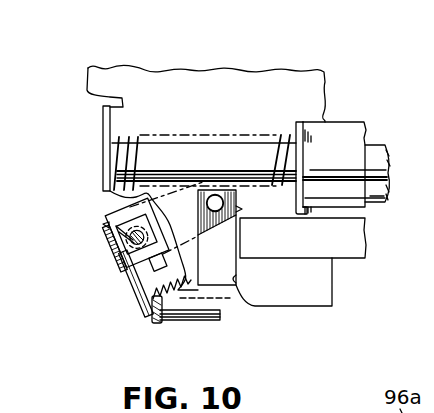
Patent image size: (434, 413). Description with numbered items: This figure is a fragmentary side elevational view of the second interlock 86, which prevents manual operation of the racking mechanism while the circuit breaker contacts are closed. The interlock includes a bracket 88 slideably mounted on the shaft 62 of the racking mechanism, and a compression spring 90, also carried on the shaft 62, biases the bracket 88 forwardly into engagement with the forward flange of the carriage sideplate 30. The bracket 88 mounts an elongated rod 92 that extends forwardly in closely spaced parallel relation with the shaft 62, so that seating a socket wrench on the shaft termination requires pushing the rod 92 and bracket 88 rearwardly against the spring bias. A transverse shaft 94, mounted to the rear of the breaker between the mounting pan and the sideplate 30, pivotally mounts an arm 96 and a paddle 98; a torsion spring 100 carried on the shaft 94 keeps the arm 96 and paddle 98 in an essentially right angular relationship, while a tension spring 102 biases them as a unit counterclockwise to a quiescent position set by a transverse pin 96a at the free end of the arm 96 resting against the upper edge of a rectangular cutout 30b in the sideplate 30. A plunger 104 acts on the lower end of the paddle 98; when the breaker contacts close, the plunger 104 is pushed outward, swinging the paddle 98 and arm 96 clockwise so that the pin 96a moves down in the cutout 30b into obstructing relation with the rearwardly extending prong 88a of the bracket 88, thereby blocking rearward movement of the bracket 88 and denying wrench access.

The carriage sideplate 30 is at (138, 80).
The rectangular cutout 30b is at (237, 277).
The shaft 62 is at (378, 150).
The interlock 86 is at (336, 113).
The bracket 88 is at (352, 131).
The prong 88a is at (270, 243).
The compression spring 90 is at (128, 142).
The rod 92 is at (375, 196).
The transverse shaft 94 is at (118, 262).
The arm 96 is at (115, 215).
The transverse pin 96a is at (213, 194).
The paddle 98 is at (136, 297).
The torsion spring 100 is at (103, 226).
The tension spring 102 is at (178, 300).
The plunger 104 is at (170, 322).